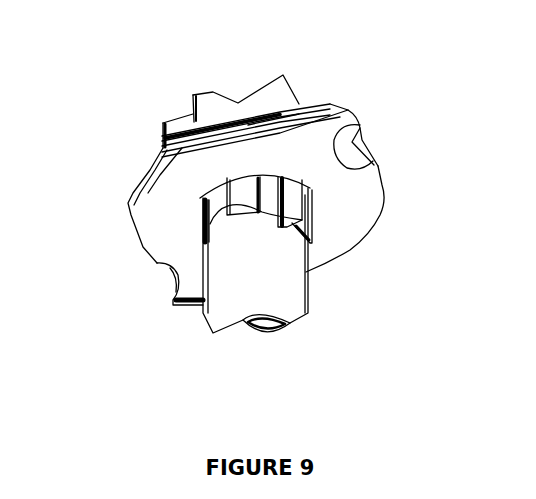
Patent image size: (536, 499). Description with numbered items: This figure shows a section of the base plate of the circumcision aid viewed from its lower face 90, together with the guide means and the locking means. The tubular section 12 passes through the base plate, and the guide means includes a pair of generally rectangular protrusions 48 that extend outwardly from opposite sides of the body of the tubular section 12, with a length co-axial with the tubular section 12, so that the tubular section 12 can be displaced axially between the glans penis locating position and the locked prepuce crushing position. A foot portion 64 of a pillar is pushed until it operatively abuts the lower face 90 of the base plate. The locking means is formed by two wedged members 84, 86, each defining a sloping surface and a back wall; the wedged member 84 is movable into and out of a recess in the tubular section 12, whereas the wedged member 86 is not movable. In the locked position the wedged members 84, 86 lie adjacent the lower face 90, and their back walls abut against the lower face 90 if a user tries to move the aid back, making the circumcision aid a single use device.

The tubular section 12 is at (307, 314).
The protrusions 48 is at (313, 222).
The foot portion 64 is at (357, 162).
The wedged member 84 is at (203, 217).
The wedged member 86 is at (227, 178).
The lower face 90 is at (287, 128).